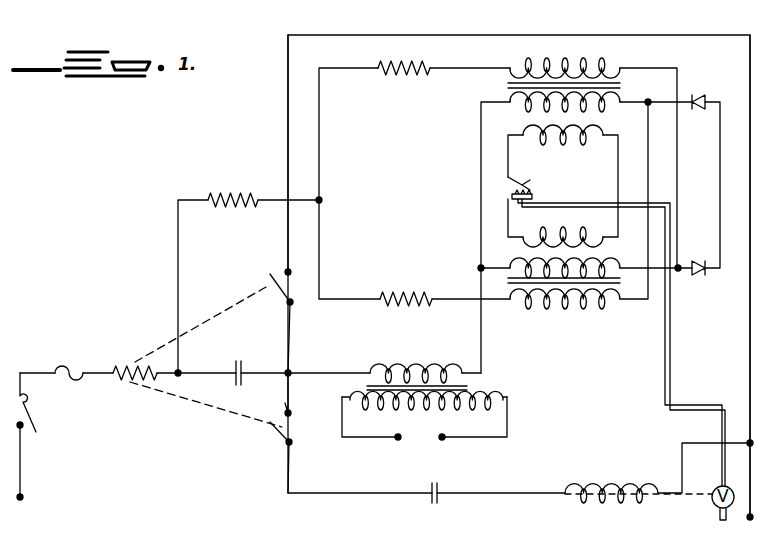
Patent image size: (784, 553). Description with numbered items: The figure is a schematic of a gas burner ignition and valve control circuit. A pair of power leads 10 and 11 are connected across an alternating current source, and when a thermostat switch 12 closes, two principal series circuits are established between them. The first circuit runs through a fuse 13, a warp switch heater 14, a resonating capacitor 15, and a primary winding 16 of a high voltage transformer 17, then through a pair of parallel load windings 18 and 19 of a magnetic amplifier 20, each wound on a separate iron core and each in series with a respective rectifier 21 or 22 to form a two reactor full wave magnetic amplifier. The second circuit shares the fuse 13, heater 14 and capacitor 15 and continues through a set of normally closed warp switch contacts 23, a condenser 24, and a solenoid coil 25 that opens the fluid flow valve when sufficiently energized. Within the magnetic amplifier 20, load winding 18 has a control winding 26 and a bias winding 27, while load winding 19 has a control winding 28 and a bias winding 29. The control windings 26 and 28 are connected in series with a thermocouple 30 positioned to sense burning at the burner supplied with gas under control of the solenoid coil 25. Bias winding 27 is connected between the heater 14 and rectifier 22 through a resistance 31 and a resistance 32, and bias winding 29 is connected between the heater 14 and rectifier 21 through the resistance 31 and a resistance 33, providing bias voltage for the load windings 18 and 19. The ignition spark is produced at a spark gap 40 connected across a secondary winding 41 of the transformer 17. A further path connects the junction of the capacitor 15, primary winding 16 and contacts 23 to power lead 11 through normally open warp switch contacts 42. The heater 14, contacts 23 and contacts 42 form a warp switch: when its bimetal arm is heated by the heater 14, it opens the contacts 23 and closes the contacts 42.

The power lead 10 is at (20, 462).
The power lead 11 is at (750, 376).
The thermostat switch 12 is at (34, 426).
The fuse 13 is at (73, 366).
The warp switch heater 14 is at (128, 366).
The resonating capacitor 15 is at (237, 361).
The primary winding 16 is at (423, 368).
The high voltage transformer 17 is at (450, 400).
The load winding 18 is at (605, 100).
The load winding 19 is at (600, 258).
The magnetic amplifier 20 is at (566, 305).
The rectifier 21 is at (700, 95).
The rectifier 22 is at (703, 277).
The warp switch contacts 23 is at (285, 438).
The condenser 24 is at (430, 497).
The solenoid coil 25 is at (628, 482).
The control winding 26 is at (568, 140).
The bias winding 27 is at (604, 67).
The control winding 28 is at (563, 235).
The bias winding 29 is at (588, 305).
The thermocouple 30 is at (524, 183).
The resistance 31 is at (242, 191).
The resistance 32 is at (406, 74).
The resistance 33 is at (402, 291).
The spark gap 40 is at (434, 441).
The secondary winding 41 is at (507, 398).
The warp switch contacts 42 is at (268, 283).